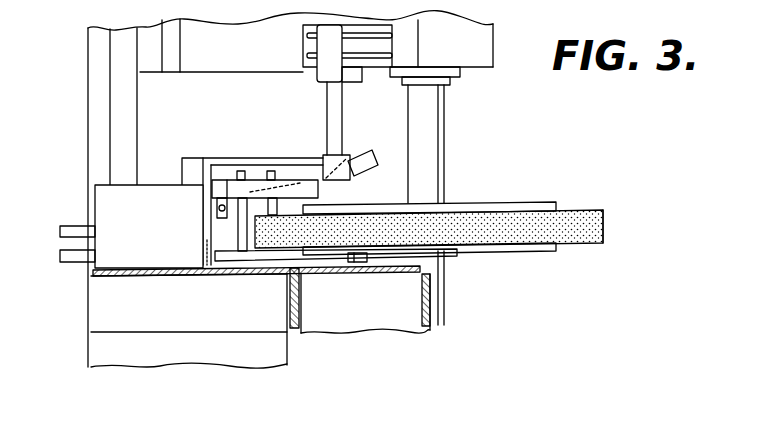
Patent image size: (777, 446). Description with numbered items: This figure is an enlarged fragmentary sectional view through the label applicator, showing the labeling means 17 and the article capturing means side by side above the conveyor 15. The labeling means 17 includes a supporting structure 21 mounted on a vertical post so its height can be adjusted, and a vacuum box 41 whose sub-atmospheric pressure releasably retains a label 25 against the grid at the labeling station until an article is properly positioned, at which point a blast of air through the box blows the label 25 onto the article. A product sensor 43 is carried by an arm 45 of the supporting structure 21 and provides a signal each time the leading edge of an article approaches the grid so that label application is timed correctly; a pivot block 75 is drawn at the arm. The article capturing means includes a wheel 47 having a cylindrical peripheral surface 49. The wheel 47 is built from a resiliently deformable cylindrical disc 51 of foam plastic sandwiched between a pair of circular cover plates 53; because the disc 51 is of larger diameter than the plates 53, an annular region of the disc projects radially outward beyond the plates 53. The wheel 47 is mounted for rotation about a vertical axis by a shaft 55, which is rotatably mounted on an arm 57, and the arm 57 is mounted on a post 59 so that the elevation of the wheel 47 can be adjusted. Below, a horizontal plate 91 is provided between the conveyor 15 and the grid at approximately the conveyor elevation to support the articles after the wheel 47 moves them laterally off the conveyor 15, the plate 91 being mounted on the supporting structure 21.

The conveyor 15 is at (345, 273).
The labeling means 17 is at (111, 281).
The supporting structure 21 is at (137, 277).
The label 25 is at (212, 226).
The vacuum box 41 is at (159, 185).
The product sensor 43 is at (374, 154).
The arm 45 is at (302, 158).
The wheel 47 is at (462, 230).
The cylindrical peripheral surface 49 is at (603, 218).
The resiliently deformable cylindrical disc 51 is at (576, 232).
The circular cover plates 53 is at (493, 203).
The shaft 55 is at (430, 112).
The arm 57 is at (478, 38).
The post 59 is at (93, 108).
The pivot block 75 is at (219, 196).
The horizontal plate 91 is at (258, 275).